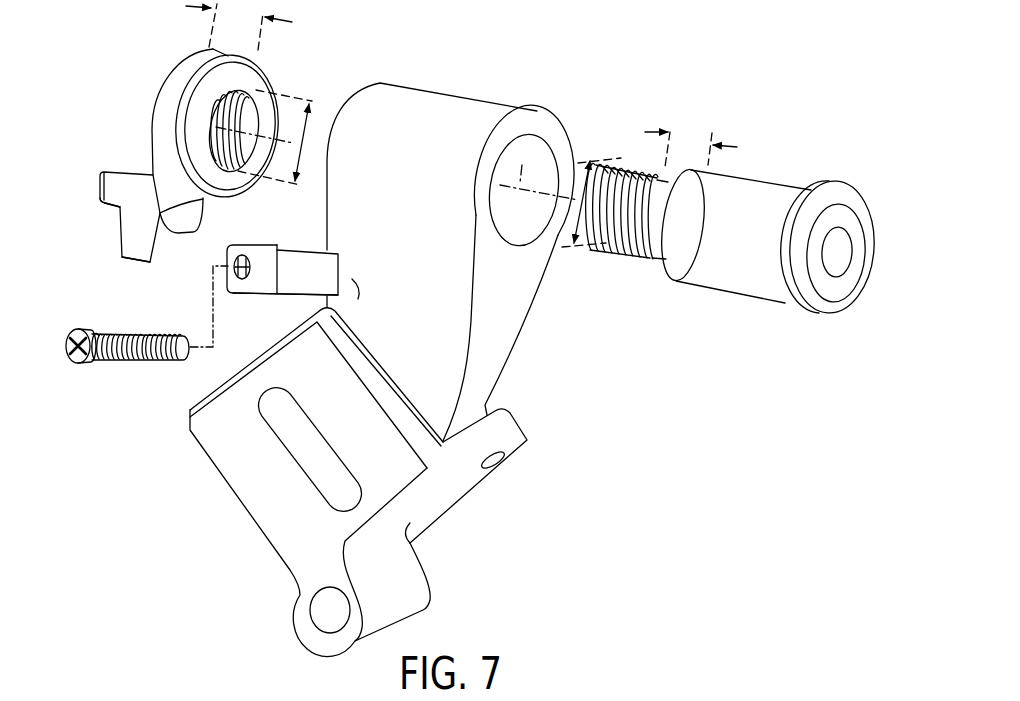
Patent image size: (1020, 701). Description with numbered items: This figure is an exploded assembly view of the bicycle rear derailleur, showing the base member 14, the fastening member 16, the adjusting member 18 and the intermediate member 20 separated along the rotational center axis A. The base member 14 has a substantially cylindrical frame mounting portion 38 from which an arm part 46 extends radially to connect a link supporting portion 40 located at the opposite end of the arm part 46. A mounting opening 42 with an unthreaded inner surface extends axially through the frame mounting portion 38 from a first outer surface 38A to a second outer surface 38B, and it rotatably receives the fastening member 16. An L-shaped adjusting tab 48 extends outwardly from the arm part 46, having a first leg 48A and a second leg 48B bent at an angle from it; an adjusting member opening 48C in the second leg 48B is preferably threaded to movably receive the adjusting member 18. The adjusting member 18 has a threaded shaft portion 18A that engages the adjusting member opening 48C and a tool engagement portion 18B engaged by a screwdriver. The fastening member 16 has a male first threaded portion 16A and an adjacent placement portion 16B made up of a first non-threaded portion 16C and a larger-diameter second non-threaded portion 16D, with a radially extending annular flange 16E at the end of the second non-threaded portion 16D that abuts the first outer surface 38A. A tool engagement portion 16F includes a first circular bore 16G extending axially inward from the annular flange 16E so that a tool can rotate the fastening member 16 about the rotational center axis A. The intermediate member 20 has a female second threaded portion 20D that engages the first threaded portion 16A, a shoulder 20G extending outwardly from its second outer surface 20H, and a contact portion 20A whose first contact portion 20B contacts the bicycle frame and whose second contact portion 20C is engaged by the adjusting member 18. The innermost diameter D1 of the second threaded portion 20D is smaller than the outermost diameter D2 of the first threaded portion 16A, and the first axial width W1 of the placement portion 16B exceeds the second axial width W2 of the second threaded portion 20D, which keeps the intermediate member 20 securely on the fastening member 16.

The base member 14 is at (474, 234).
The fastening member 16 is at (741, 234).
The first threaded portion 16A is at (630, 188).
The placement portion 16B is at (652, 260).
The first non-threaded portion 16C is at (648, 227).
The second non-threaded portion 16D is at (778, 203).
The annular flange 16E is at (847, 183).
The tool engagement portion 16F is at (853, 228).
The first circular bore 16G is at (834, 265).
The adjusting member 18 is at (142, 344).
The threaded shaft portion 18A is at (135, 362).
The tool engagement portion 18B is at (82, 325).
The intermediate member 20 is at (183, 63).
The contact portion 20A is at (93, 178).
The first contact portion 20B is at (95, 190).
The second contact portion 20C is at (133, 263).
The second threaded portion 20D is at (240, 110).
The shoulder 20G is at (248, 78).
The second outer surface 20H is at (187, 208).
The frame mounting portion 38 is at (462, 234).
The first outer surface 38A is at (548, 128).
The second outer surface 38B is at (362, 97).
The link supporting portion 40 is at (440, 497).
The mounting opening 42 is at (522, 212).
The arm part 46 is at (483, 340).
The adjusting tab 48 is at (288, 281).
The first leg 48A is at (313, 272).
The second leg 48B is at (260, 277).
The adjusting member opening 48C is at (247, 252).
The first axial width W1 is at (750, 172).
The second axial width W2 is at (239, 26).
The innermost diameter D1 is at (308, 123).
The outermost diameter D2 is at (583, 163).
The rotational center axis A is at (539, 171).